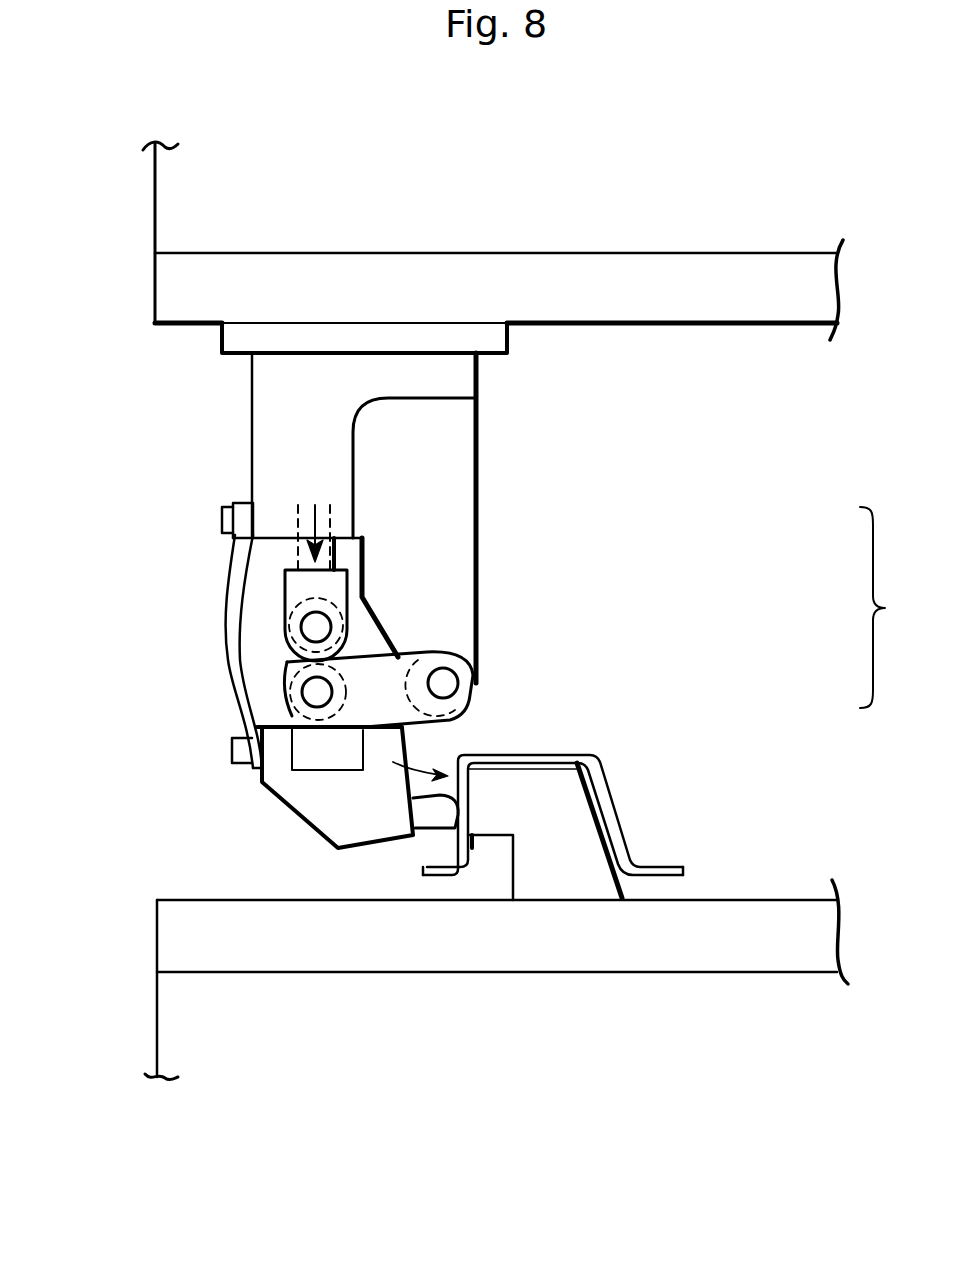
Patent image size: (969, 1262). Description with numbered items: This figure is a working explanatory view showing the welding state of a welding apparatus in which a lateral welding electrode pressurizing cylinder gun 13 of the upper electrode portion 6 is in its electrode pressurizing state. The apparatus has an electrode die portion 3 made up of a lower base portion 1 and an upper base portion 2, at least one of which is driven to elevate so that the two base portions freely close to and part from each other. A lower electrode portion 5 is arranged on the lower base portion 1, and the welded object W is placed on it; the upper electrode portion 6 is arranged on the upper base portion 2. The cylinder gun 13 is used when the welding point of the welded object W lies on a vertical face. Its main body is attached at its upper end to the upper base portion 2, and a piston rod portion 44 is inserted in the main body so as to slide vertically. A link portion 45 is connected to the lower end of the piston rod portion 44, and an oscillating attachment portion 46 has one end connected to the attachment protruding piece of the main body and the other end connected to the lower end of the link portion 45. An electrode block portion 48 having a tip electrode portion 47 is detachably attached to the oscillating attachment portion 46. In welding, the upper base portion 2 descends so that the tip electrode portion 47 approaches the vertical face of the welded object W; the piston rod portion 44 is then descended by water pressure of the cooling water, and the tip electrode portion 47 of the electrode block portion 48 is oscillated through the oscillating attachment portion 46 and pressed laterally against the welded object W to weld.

The lower base portion 1 is at (715, 905).
The upper base portion 2 is at (717, 326).
The electrode die portion 3 is at (886, 607).
The lower electrode portion 5 is at (565, 885).
The upper electrode portion 6 is at (178, 447).
The lateral welding electrode pressurizing cylinder gun 13 is at (447, 523).
The piston rod portion 44 is at (298, 600).
The link portion 45 is at (290, 662).
The oscillating attachment portion 46 is at (308, 743).
The tip electrode portion 47 is at (438, 813).
The electrode block portion 48 is at (312, 805).
The welded object W is at (584, 754).